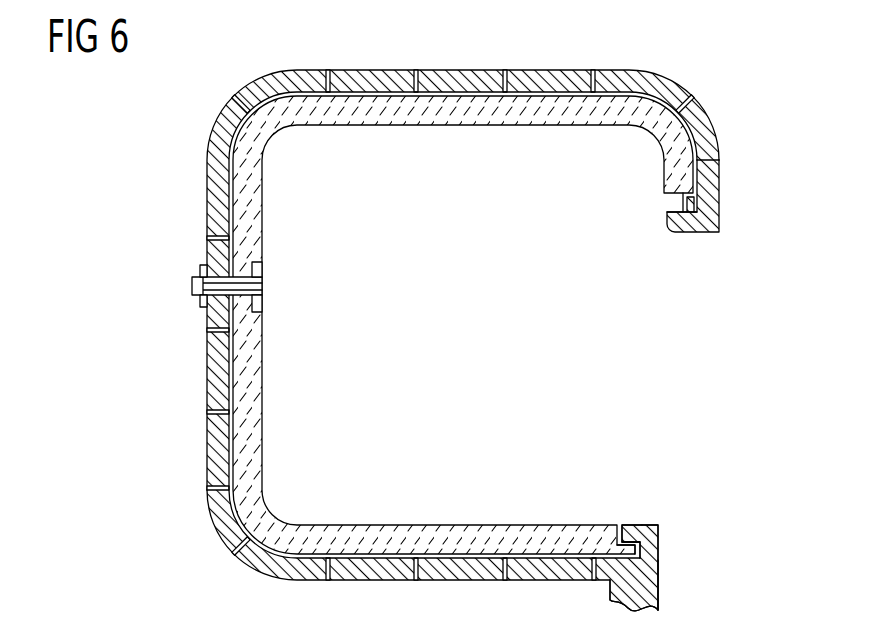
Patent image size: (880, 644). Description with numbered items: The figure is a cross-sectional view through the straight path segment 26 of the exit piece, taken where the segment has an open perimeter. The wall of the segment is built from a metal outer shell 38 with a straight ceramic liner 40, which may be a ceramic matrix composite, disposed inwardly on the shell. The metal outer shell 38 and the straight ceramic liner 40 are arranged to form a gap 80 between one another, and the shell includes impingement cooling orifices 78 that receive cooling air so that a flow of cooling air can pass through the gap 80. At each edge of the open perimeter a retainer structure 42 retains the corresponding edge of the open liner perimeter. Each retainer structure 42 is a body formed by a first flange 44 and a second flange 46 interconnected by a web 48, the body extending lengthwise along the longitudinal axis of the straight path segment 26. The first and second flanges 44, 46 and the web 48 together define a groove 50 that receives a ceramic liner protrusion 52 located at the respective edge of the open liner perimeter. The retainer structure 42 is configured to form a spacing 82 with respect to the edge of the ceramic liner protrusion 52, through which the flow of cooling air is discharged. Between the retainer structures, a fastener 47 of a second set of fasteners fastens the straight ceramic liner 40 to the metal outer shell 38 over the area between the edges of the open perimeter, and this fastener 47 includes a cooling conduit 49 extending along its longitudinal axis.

The straight path segment 26 is at (158, 208).
The metal outer shell 38 is at (212, 351).
The straight ceramic liner 40 is at (248, 371).
The impingement cooling orifices 78 is at (419, 70).
The gaps 80 is at (231, 222).
The spacings 82 is at (672, 193).
The retainer structure 42 is at (682, 250).
The first flange 44 is at (633, 525).
The second flange 46 is at (625, 572).
The web 48 is at (659, 561).
The groove 50 is at (689, 211).
The ceramic liner protrusion 52 is at (691, 197).
The fastener 47 is at (260, 276).
The cooling conduit 49 is at (197, 286).